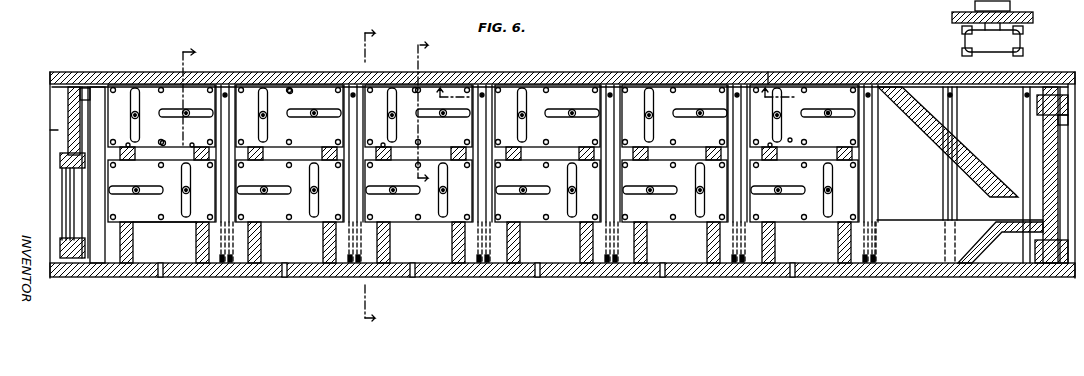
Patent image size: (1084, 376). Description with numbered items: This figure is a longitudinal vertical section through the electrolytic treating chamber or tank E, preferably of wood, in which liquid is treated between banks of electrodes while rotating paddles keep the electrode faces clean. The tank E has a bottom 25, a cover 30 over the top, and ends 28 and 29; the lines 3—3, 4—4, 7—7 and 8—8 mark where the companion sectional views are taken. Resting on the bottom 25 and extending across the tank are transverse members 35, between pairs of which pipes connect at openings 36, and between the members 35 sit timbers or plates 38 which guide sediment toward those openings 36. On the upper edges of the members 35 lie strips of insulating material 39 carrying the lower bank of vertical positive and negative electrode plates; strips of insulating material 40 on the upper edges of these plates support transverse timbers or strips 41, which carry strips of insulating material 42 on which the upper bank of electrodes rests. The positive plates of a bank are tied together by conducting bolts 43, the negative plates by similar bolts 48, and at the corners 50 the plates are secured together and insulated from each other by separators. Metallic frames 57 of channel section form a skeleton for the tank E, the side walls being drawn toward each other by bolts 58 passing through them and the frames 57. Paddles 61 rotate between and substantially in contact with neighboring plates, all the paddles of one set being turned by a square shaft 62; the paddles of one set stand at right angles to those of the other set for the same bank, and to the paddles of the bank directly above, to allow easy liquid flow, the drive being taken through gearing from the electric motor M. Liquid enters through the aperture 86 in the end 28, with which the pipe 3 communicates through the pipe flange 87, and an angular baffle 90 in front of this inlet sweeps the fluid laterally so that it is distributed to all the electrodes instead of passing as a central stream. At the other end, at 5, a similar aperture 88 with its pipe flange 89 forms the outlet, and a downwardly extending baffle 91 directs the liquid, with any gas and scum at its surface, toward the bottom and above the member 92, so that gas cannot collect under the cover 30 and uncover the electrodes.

The pipe 3 is at (369, 175).
The section line 4— 4 is at (34, 138).
The outlet end location 5 is at (1036, 106).
The section line 7— 7 is at (183, 93).
The section line 8— 8 is at (611, 97).
The bottom 25 is at (512, 270).
The end 28 is at (68, 115).
The end 29 is at (1022, 265).
The top or cover 30 is at (645, 72).
The timbers or members 35 is at (131, 264).
The openings 36 is at (162, 278).
The timbers or plates 38 is at (770, 256).
The strips of insulating material 39 is at (129, 224).
The strips of insulating material 40 is at (848, 195).
The transverse timbers or strips 41 is at (128, 145).
The strips of insulating material 42 is at (192, 145).
The conducting bolts 43 is at (291, 88).
The bolts 48 is at (220, 167).
The corners of the electrode plates 50 is at (243, 88).
The metallic frames 57 is at (84, 264).
The bolts 58 is at (226, 93).
The paddles 61 is at (131, 108).
The shaft 62 is at (829, 110).
The aperture 86 is at (65, 198).
The pipe flange 87 is at (60, 163).
The aperture 88 is at (1048, 152).
The pipe flange 89 is at (1059, 92).
The angular baffle 90 is at (100, 100).
The downwardly extending baffle 91 is at (915, 120).
The member 92 is at (1000, 222).
The electric motor M is at (962, 40).
The electrolytic treating chamber or tank E is at (768, 72).